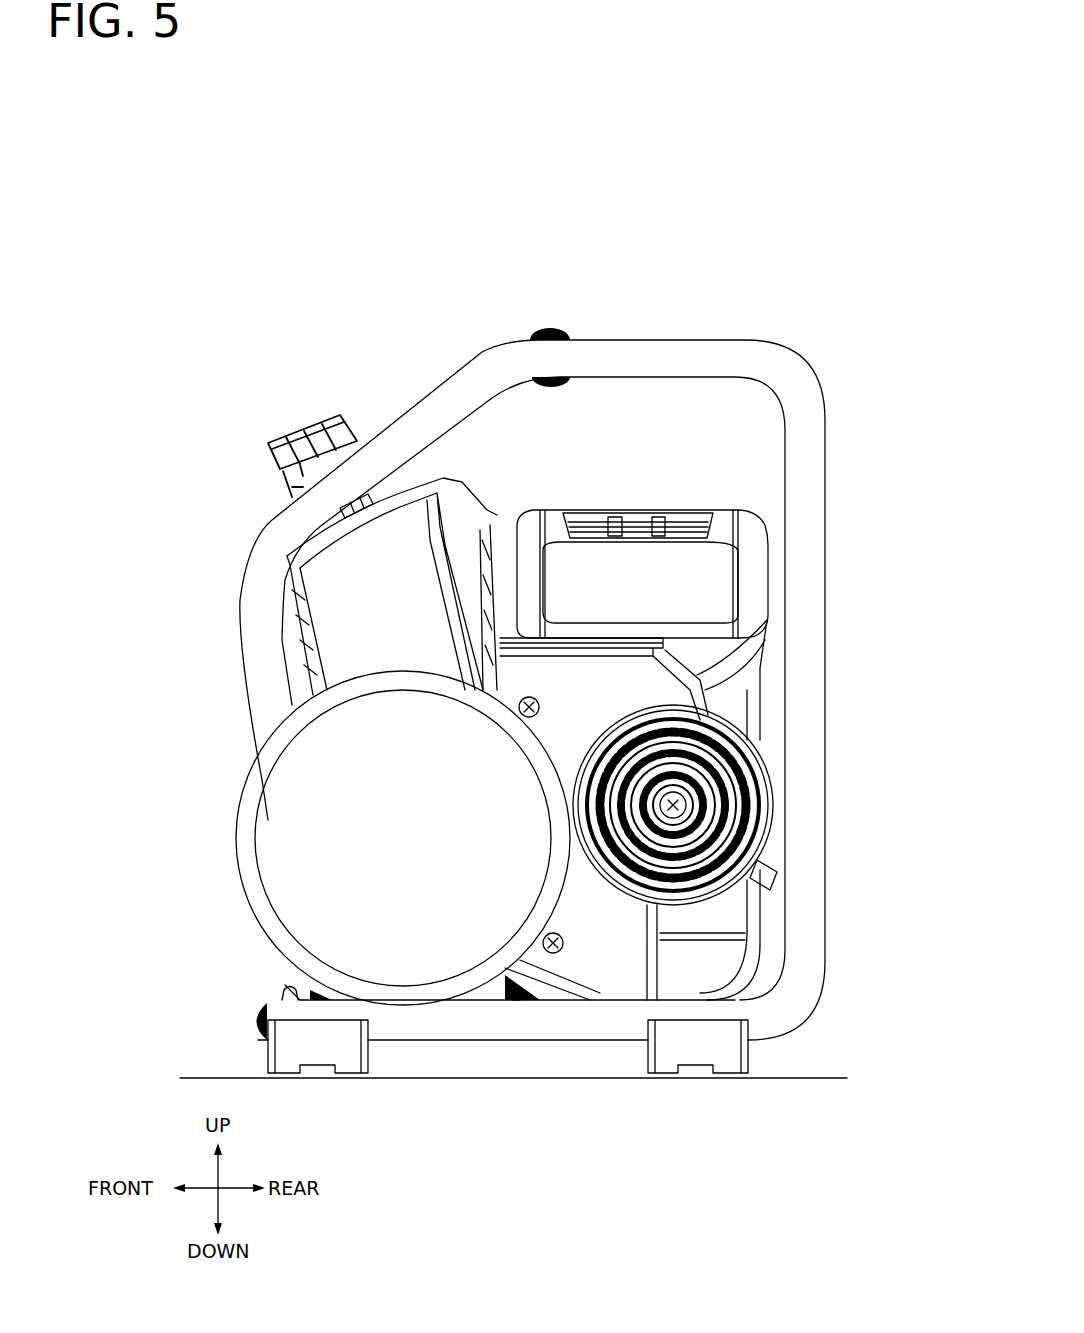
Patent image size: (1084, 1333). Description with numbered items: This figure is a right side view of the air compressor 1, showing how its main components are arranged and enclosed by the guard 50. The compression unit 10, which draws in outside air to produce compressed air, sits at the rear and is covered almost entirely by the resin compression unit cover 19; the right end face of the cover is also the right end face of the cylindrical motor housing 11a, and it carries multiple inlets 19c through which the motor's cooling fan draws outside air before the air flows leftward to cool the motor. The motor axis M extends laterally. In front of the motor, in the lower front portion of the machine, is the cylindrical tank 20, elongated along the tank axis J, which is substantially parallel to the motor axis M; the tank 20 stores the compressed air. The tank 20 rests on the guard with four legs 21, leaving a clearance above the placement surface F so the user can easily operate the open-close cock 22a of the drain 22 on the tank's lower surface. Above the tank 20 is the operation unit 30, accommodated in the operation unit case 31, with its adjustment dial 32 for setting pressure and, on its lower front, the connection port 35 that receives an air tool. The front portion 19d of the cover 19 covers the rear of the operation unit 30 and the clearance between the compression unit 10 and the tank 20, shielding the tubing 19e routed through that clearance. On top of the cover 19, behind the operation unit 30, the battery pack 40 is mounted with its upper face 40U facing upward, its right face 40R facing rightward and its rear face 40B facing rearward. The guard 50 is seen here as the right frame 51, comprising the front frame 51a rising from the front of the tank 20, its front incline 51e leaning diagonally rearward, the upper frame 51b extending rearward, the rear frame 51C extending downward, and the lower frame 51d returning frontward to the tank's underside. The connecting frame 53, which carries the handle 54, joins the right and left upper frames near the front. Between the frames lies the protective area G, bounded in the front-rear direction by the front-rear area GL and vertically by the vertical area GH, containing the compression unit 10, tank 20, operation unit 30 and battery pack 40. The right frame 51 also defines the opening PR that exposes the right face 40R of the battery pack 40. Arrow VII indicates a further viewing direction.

The air compressor 1 is at (221, 310).
The compression unit 10 is at (777, 905).
The motor housing 11a is at (770, 828).
The compression unit cover 19 is at (744, 792).
The inlets 19c is at (690, 800).
The front portion 19d is at (305, 553).
The tubing 19e is at (560, 640).
The tank 20 is at (312, 889).
The legs 21 is at (285, 1057).
The drain 22 is at (211, 1000).
The open-close cock 22a is at (285, 1000).
The operation unit 30 is at (320, 412).
The operation unit case 31 is at (373, 597).
The adjustment dial 32 is at (295, 440).
The connection port 35 is at (292, 672).
The battery pack 40 is at (745, 512).
The upper face 40U is at (673, 510).
The rear face 40B is at (780, 563).
The right face 40R is at (703, 590).
The guard 50 is at (432, 372).
The right frame 51 is at (720, 346).
The front frame 51a is at (253, 720).
The upper frame 51b is at (640, 352).
The rear frame 51C is at (814, 527).
The lower frame 51d is at (525, 1028).
The front incline 51e is at (398, 412).
The connecting frame 53 is at (506, 332).
The handle 54 is at (548, 328).
The protective area G is at (577, 460).
The opening PR is at (601, 585).
The tank axis J is at (408, 835).
The motor axis M is at (620, 865).
The placement surface F is at (818, 1078).
The front-rear area GL is at (824, 231).
The vertical area GH is at (770, 340).
The view direction VII is at (860, 733).